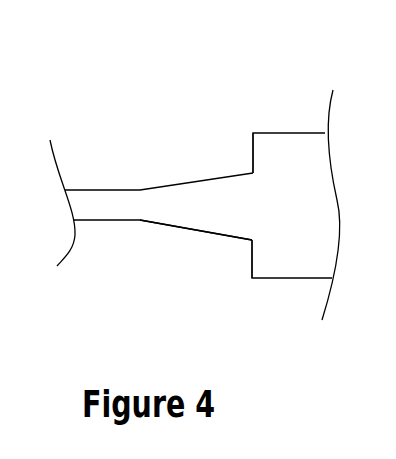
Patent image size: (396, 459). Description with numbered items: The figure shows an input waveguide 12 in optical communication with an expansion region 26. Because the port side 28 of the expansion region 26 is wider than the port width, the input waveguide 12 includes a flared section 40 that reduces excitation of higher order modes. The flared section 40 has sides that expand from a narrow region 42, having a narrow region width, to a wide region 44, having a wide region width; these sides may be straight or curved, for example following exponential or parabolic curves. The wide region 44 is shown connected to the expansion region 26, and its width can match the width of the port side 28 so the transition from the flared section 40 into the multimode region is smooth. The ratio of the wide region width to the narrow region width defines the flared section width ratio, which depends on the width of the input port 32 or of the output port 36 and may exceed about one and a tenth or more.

The input waveguide 12 is at (118, 190).
The expansion region 26 is at (292, 94).
The port side 28 is at (252, 152).
The input port 32 is at (253, 212).
The output port 36 is at (255, 193).
The flared section 40 is at (201, 266).
The narrow region 42 is at (140, 222).
The wide region 44 is at (248, 243).